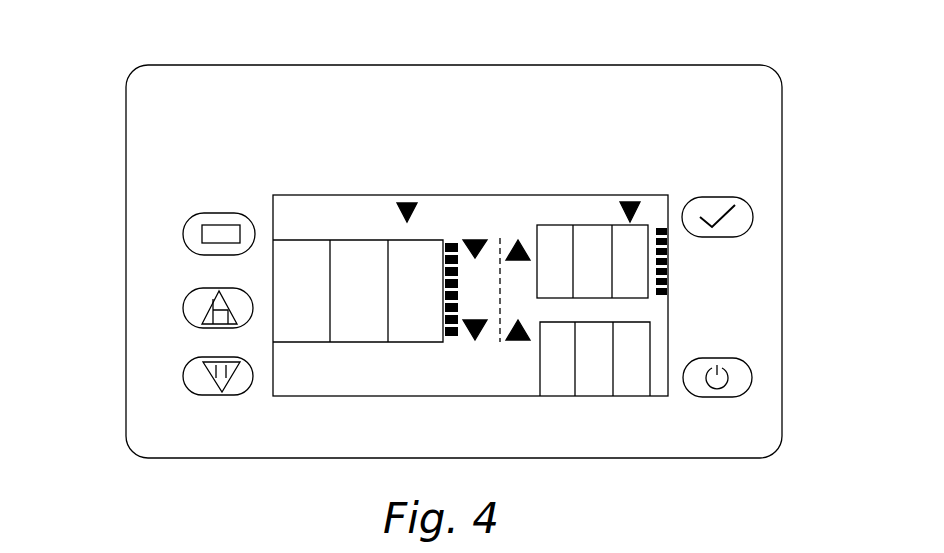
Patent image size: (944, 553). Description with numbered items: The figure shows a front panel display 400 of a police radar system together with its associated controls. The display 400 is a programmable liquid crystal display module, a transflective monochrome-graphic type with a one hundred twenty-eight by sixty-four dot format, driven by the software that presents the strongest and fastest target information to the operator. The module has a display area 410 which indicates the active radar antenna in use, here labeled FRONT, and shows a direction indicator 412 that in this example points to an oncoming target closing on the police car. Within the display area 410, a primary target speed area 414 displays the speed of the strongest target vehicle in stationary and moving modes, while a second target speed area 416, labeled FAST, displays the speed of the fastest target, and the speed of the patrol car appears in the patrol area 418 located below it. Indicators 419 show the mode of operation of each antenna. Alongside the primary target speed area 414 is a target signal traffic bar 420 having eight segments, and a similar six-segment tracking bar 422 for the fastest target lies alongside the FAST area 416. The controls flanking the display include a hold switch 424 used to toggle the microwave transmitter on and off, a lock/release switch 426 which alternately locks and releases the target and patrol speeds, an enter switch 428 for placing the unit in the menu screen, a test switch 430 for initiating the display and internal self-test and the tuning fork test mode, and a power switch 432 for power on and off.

The front panel display 400 is at (455, 57).
The display area 410 is at (302, 195).
The direction indicator 412 is at (407, 200).
The primary target speed area 414 is at (318, 342).
The second target speed area 416 is at (642, 223).
The patrol area 418 is at (630, 396).
The indicators 419 is at (513, 237).
The target signal traffic bar 420 is at (452, 338).
The tracking bar 422 is at (660, 294).
The hold switch 424 is at (183, 376).
The lock/release switch 426 is at (183, 309).
The enter switch 428 is at (183, 237).
The test switch 430 is at (753, 217).
The power switch 432 is at (752, 385).